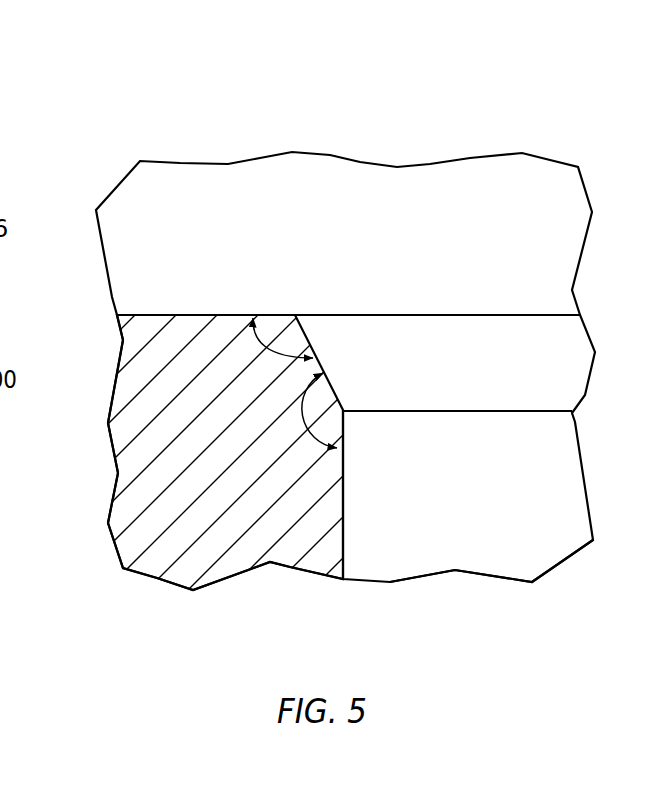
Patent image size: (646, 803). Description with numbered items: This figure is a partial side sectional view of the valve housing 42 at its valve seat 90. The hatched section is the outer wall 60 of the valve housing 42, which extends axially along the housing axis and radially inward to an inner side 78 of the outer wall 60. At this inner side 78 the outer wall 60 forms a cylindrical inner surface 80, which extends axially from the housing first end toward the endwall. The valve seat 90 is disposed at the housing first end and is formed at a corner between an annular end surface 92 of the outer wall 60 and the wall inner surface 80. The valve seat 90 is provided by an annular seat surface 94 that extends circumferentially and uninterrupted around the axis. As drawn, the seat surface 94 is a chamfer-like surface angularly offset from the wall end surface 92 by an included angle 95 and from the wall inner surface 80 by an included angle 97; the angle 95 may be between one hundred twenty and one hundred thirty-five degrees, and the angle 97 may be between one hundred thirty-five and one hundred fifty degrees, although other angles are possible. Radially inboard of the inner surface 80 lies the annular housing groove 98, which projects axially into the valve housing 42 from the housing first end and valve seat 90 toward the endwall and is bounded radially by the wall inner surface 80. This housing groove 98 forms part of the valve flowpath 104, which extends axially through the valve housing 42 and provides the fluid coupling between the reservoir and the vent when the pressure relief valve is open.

The valve housing 42 is at (467, 98).
The outer wall 60 is at (102, 520).
The annular end surface 92 is at (160, 315).
The valve seat 90 is at (437, 291).
The annular seat surface 94 is at (360, 337).
The included angle 95 is at (258, 361).
The included angle 97 is at (305, 412).
The annular groove 98 is at (551, 480).
The inner side 78 is at (358, 525).
The cylindrical inner surface 80 is at (343, 546).
The valve flowpath 104 is at (497, 560).